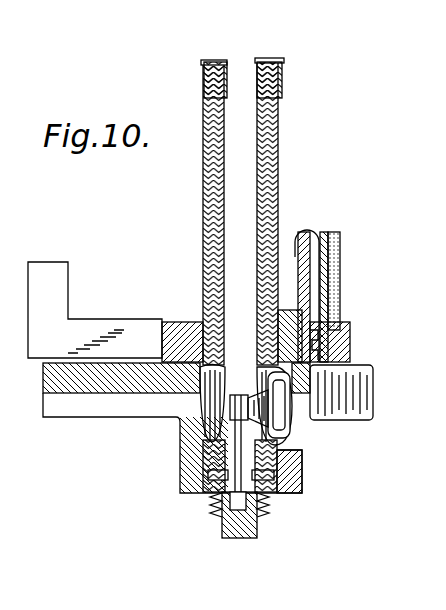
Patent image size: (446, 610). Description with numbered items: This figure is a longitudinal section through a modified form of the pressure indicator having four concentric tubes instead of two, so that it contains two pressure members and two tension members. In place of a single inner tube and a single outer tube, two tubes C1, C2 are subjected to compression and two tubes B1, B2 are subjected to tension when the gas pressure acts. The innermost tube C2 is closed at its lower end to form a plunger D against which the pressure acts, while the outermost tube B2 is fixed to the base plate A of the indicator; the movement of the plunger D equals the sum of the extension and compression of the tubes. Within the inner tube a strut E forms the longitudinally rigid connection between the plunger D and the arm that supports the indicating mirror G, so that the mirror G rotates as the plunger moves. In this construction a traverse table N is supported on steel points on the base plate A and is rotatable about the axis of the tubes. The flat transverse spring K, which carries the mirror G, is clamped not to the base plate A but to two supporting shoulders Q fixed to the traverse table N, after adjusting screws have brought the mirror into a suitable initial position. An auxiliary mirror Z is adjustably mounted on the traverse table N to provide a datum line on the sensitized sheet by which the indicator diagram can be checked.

The base plate A is at (100, 392).
The tension tube B1 is at (170, 523).
The outermost tube B2 is at (228, 90).
The compression tube C1 is at (206, 226).
The innermost tube C2 is at (255, 95).
The plunger D is at (236, 540).
The strut E is at (280, 487).
The indicating mirror G is at (285, 418).
The flat transverse spring K is at (283, 408).
The traverse table N is at (119, 332).
The supporting shoulders Q is at (305, 382).
The auxiliary mirror Z is at (340, 265).